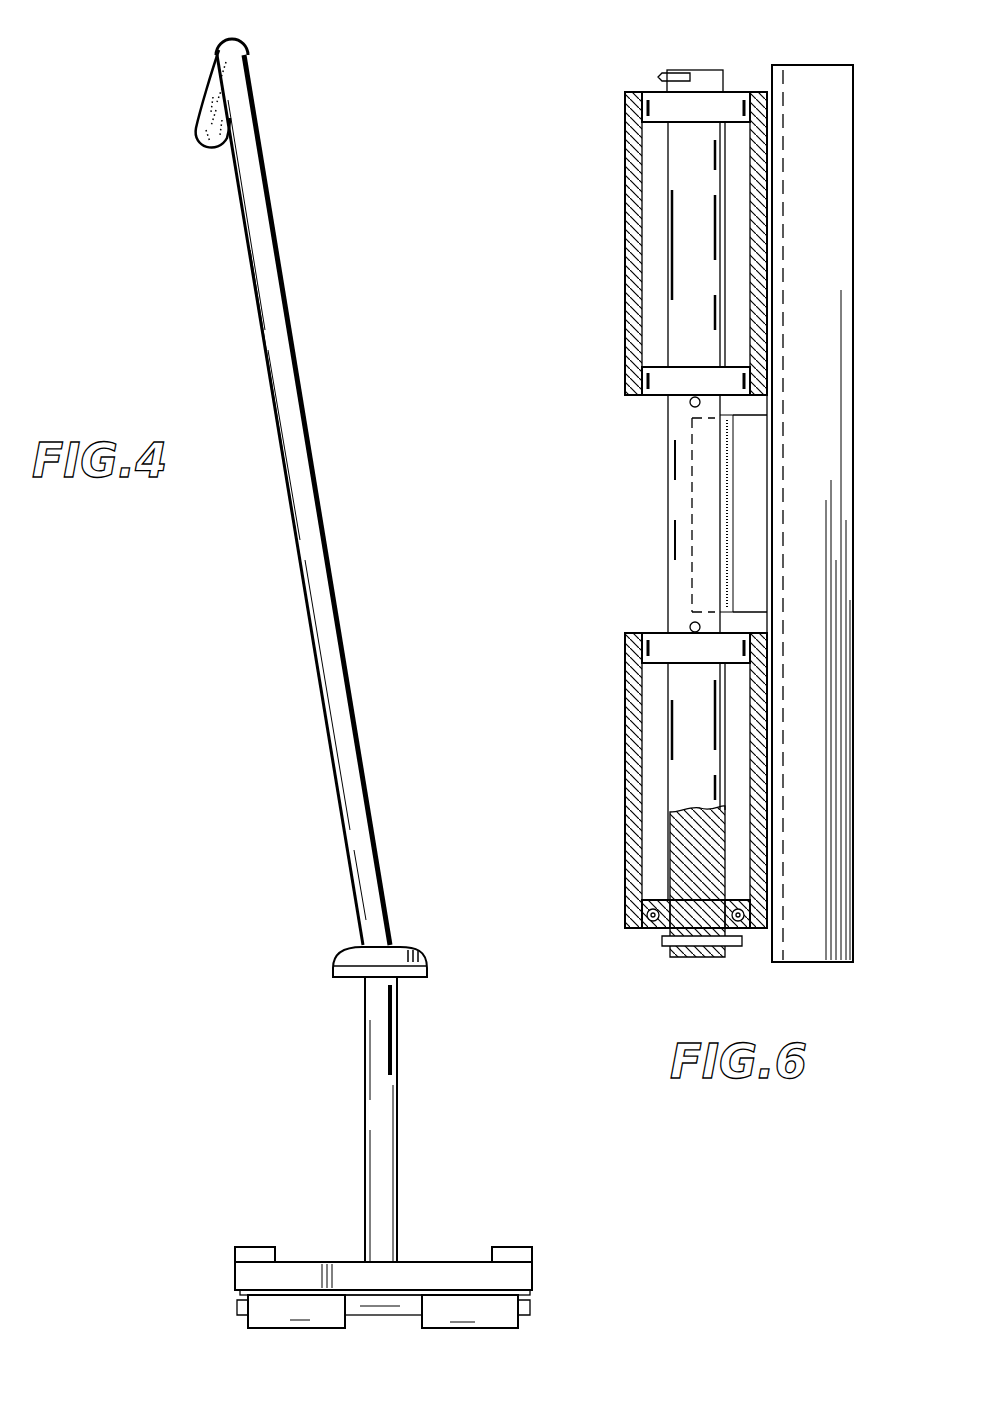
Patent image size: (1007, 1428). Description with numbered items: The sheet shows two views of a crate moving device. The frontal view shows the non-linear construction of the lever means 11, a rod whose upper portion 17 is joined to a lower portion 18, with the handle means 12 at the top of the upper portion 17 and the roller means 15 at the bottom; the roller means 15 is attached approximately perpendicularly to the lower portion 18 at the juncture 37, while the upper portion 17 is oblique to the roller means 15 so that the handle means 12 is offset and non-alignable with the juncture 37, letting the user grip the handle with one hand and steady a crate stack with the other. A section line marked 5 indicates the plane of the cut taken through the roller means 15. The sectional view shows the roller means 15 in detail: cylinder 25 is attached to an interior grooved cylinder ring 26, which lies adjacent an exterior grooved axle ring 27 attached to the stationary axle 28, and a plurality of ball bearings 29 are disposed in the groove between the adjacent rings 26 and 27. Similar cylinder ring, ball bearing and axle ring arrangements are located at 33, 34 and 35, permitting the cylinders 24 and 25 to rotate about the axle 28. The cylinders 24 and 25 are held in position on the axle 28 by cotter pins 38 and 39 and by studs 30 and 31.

In FIG. 4, the lever means 11 is at (356, 715).
In FIG. 4, the handle means 12 is at (205, 100).
In FIG. 4, the roller means 15 is at (548, 1305).
In FIG. 6, the roller means 15 is at (580, 462).
In FIG. 4, the upper portion 17 is at (297, 527).
In FIG. 4, the lower portion 18 is at (365, 1012).
In FIG. 6, the cylinder 24 is at (627, 200).
In FIG. 6, the cylinder 25 is at (627, 712).
In FIG. 6, the interior grooved cylinder ring 26 is at (650, 928).
In FIG. 6, the exterior grooved axle ring 27 is at (655, 935).
In FIG. 6, the stationary axle 28 is at (695, 955).
In FIG. 6, the ball bearings 29 is at (648, 914).
In FIG. 6, the stud 30 is at (690, 407).
In FIG. 6, the stud 31 is at (693, 622).
In FIG. 6, the cylinder ring, ball bearing and axle ring arrangement 33 is at (655, 633).
In FIG. 6, the cylinder ring, ball bearing and axle ring arrangement 34 is at (650, 400).
In FIG. 6, the cylinder ring, ball bearing and axle ring arrangement 35 is at (655, 92).
In FIG. 4, the juncture 37 is at (385, 1262).
In FIG. 6, the cotter pin 38 is at (728, 72).
In FIG. 6, the cotter pin 39 is at (736, 946).
In FIG. 4, the section line 5 is at (373, 1102).